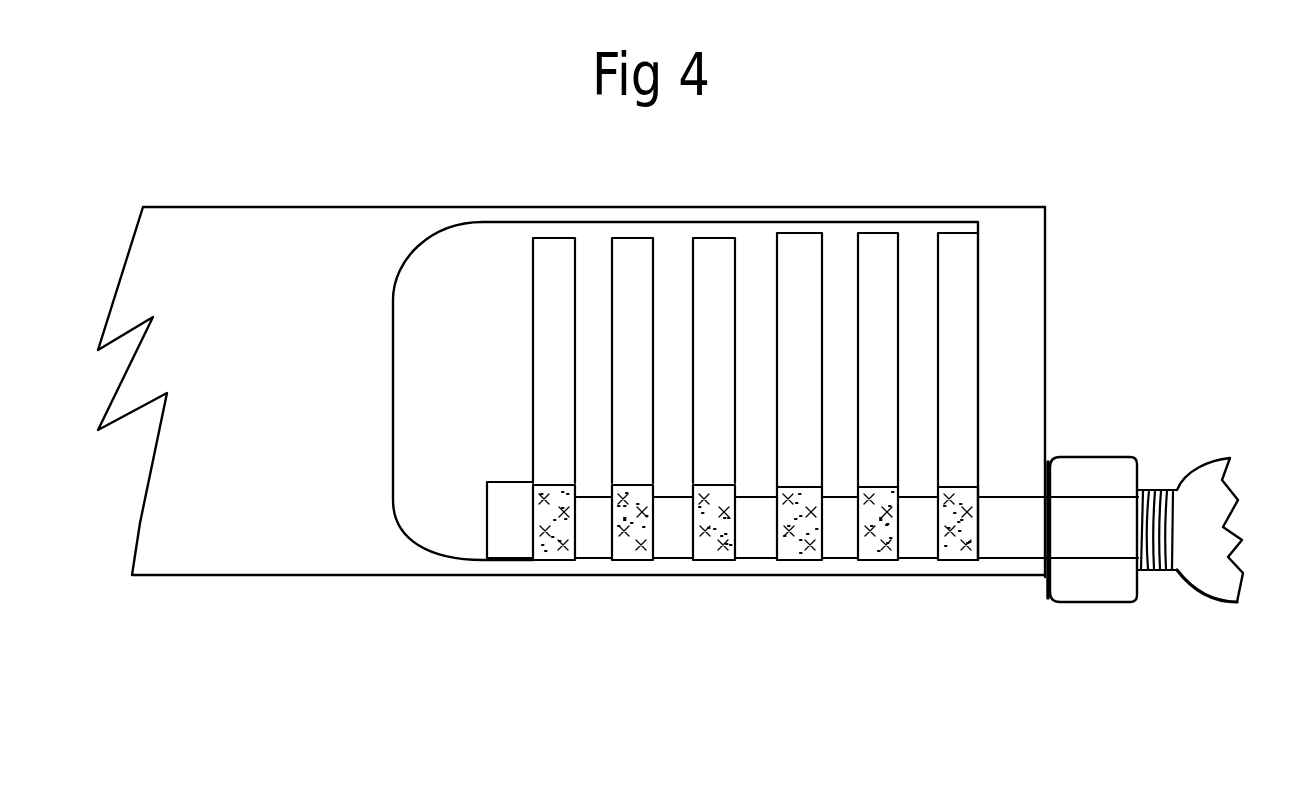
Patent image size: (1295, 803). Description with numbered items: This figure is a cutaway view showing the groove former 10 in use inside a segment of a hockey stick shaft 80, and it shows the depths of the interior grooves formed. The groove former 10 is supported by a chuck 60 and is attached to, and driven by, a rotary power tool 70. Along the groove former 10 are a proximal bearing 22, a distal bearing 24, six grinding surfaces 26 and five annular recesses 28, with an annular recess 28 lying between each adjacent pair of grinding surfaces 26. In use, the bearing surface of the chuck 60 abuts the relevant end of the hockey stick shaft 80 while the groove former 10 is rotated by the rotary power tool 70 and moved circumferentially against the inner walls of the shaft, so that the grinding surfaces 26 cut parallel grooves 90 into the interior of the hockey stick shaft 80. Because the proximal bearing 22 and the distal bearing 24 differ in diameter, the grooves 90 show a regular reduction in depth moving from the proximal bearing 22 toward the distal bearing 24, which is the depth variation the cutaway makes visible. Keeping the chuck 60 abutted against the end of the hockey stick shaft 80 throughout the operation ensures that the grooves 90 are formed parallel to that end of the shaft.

The groove former 10 is at (1017, 492).
The proximal bearing 22 is at (1012, 540).
The distal bearing 24 is at (508, 542).
The grinding surfaces 26 is at (637, 557).
The annular recesses 28 is at (593, 550).
The chuck 60 is at (1113, 457).
The rotary power tool 70 is at (1217, 607).
The hockey stick shaft 80 is at (383, 207).
The grooves 90 is at (972, 323).